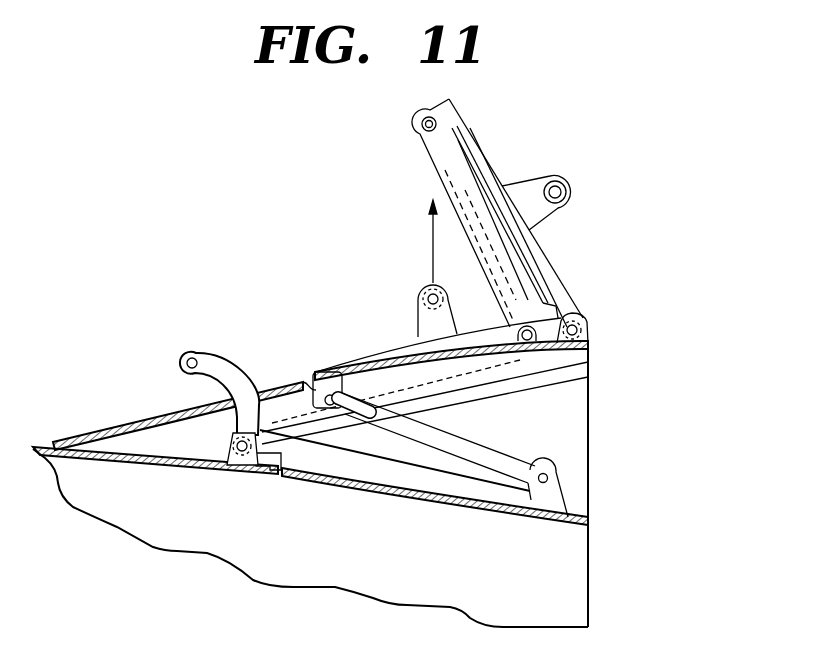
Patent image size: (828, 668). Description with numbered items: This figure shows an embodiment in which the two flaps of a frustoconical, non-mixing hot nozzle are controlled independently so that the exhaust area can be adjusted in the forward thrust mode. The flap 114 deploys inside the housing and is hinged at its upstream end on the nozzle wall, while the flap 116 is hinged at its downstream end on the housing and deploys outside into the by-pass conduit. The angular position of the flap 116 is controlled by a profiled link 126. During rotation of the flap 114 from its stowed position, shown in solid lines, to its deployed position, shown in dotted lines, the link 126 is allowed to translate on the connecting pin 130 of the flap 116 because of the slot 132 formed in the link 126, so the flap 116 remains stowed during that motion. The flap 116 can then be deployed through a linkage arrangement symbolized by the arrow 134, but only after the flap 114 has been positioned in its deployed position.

The flap 114 is at (437, 503).
The flap 116 is at (385, 356).
The profiled link 126 is at (446, 444).
The connecting pin 130 is at (317, 370).
The slot 132 is at (350, 420).
The arrow 134 is at (432, 243).